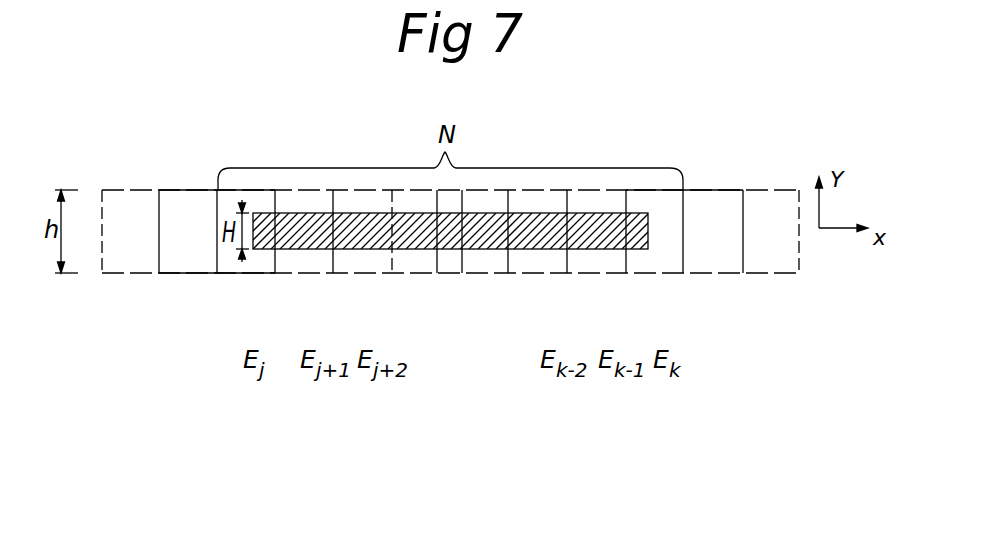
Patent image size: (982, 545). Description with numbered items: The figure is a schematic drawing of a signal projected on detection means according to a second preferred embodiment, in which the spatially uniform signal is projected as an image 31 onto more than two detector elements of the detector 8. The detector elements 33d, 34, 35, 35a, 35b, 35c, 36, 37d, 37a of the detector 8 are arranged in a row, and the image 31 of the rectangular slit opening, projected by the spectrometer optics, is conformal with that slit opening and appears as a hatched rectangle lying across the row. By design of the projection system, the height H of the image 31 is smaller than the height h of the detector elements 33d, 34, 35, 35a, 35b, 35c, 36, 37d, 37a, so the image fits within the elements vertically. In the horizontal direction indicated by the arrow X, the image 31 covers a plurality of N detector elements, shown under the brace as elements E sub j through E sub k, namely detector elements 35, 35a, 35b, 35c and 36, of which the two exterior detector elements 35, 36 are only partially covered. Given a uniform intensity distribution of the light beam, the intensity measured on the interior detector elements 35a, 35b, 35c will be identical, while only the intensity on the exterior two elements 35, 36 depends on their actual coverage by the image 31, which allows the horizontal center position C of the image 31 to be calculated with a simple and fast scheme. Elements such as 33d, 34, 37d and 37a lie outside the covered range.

The detector 8 is at (93, 203).
The image 31 is at (647, 221).
The detector element 33d is at (118, 265).
The detector element 34 is at (176, 265).
The detector element 35 is at (233, 265).
The detector element 35a is at (291, 265).
The detector element 35b is at (349, 265).
The detector element 35c is at (531, 265).
The detector element 36 is at (647, 265).
The detector element 37d is at (704, 265).
The detector element 37a is at (762, 265).